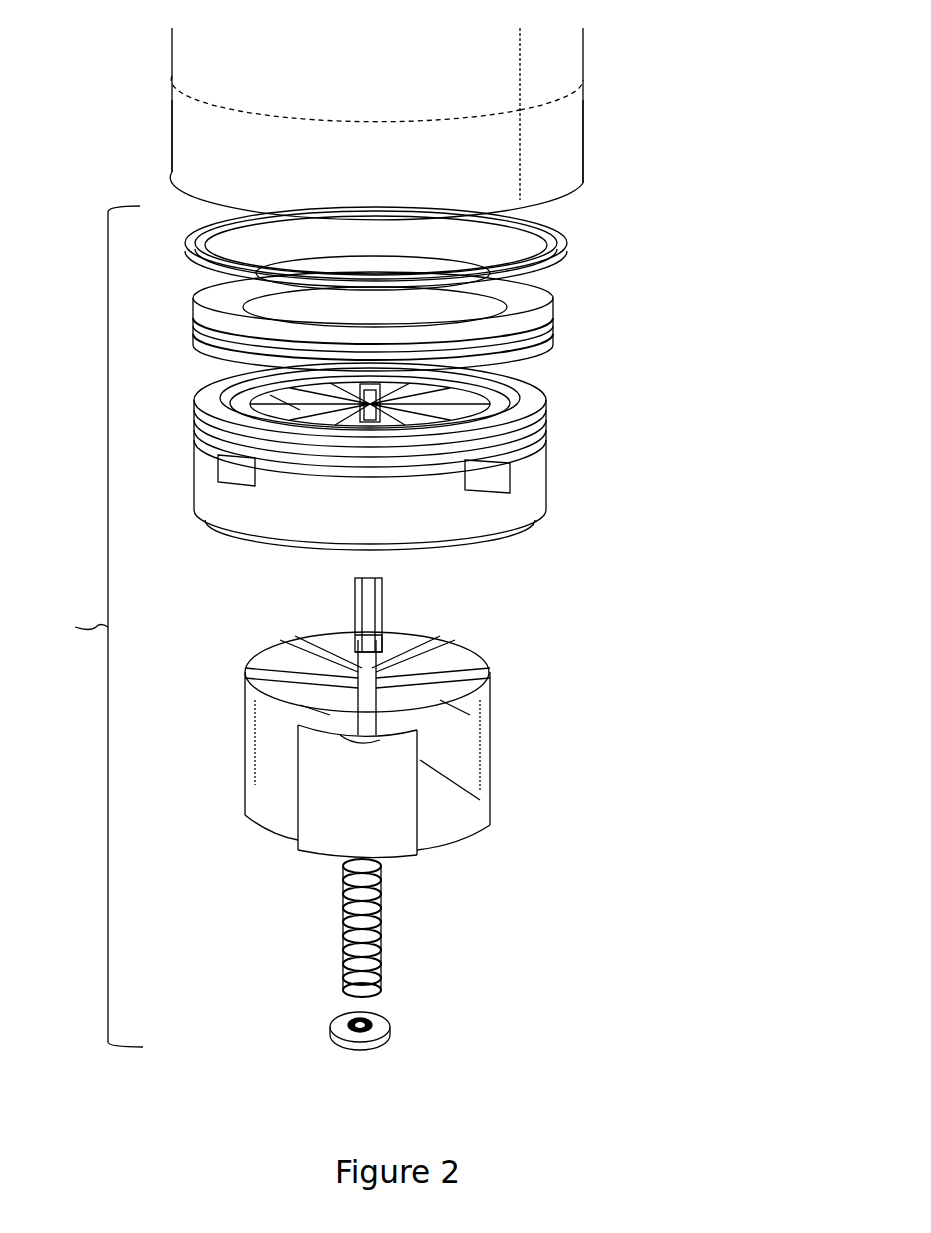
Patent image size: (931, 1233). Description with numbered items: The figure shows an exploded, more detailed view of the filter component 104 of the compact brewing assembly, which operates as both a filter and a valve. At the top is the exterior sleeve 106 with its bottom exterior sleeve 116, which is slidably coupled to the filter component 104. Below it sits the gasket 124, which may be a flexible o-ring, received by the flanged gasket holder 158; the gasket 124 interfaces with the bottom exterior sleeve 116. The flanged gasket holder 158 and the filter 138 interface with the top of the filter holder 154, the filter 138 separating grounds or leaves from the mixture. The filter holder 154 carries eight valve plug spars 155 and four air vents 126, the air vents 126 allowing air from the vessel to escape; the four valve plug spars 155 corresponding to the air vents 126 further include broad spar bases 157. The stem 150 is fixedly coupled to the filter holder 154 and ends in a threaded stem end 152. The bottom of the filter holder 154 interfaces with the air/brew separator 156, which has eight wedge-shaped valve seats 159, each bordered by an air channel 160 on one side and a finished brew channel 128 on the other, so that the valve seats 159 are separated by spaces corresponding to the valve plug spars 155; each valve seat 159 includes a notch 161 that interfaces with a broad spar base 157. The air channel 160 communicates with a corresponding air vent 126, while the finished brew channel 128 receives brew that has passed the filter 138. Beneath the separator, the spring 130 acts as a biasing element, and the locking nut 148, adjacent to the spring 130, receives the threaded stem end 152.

The filter component 104 is at (88, 626).
The exterior sleeve 106 is at (563, 78).
The bottom exterior sleeve 116 is at (558, 158).
The gasket 124 is at (565, 230).
The flanged gasket holder 158 is at (563, 277).
The filter 138 is at (500, 368).
The filter holder 154 is at (548, 458).
The air vent 126 is at (490, 485).
The valve plug spar 155 is at (367, 418).
The broad spar base 157 is at (283, 417).
The stem 150 is at (385, 603).
The threaded stem end 152 is at (360, 650).
The notch 161 is at (457, 700).
The air/brew separator 156 is at (483, 730).
The finished brew channel 128 is at (363, 745).
The air channel 160 is at (440, 822).
The valve seat 159 is at (315, 707).
The spring 130 is at (375, 940).
The locking nut 148 is at (373, 1047).